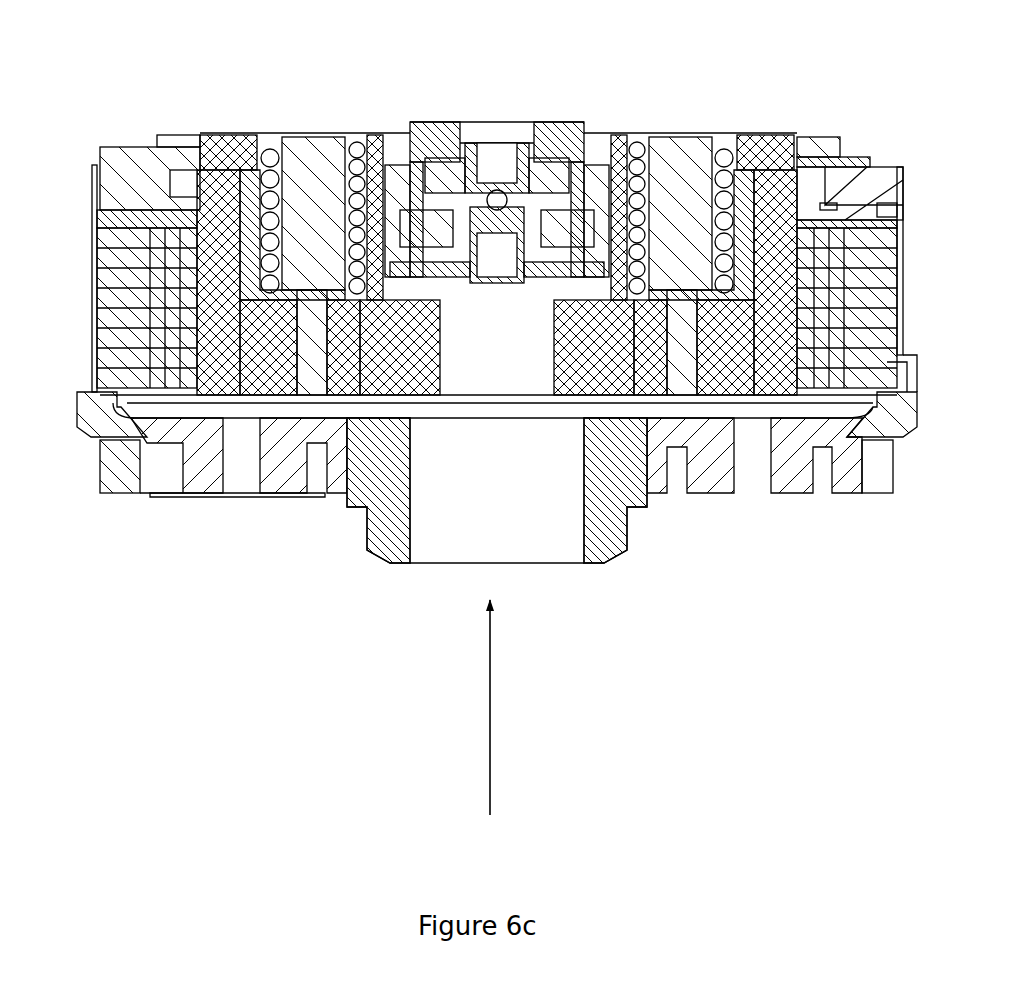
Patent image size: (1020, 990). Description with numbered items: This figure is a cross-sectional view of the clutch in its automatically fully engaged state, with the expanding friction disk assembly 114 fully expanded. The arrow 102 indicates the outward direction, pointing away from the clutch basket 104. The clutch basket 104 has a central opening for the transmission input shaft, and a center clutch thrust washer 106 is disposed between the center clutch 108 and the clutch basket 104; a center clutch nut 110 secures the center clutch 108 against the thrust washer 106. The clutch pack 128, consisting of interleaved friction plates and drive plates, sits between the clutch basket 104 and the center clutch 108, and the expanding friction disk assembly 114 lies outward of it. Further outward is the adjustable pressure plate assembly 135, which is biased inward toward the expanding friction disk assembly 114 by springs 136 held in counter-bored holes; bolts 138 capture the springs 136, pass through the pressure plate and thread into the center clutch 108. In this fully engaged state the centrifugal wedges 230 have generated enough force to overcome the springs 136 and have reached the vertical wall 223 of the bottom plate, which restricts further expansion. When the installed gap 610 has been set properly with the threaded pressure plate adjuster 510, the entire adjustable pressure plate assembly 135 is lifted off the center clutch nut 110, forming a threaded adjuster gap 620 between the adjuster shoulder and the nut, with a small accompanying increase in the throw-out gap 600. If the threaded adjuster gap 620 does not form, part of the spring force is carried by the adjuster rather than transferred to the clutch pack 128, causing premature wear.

The arrow 102 is at (514, 707).
The clutch basket 104 is at (97, 413).
The center clutch thrust washer 106 is at (587, 407).
The center clutch 108 is at (237, 345).
The center clutch nut 110 is at (563, 228).
The expanding friction disk assembly 114 is at (158, 187).
The clutch pack 128 is at (90, 383).
The adjustable pressure plate assembly 135 is at (223, 145).
The springs 136 is at (355, 155).
The bolts 138 is at (307, 188).
The vertical wall 223 is at (895, 178).
The centrifugal wedges 230 is at (888, 185).
The threaded pressure plate adjuster 510 is at (440, 142).
The throw-out gap 600 is at (552, 150).
The installed gap 610 is at (820, 152).
The threaded adjuster gap 620 is at (578, 200).